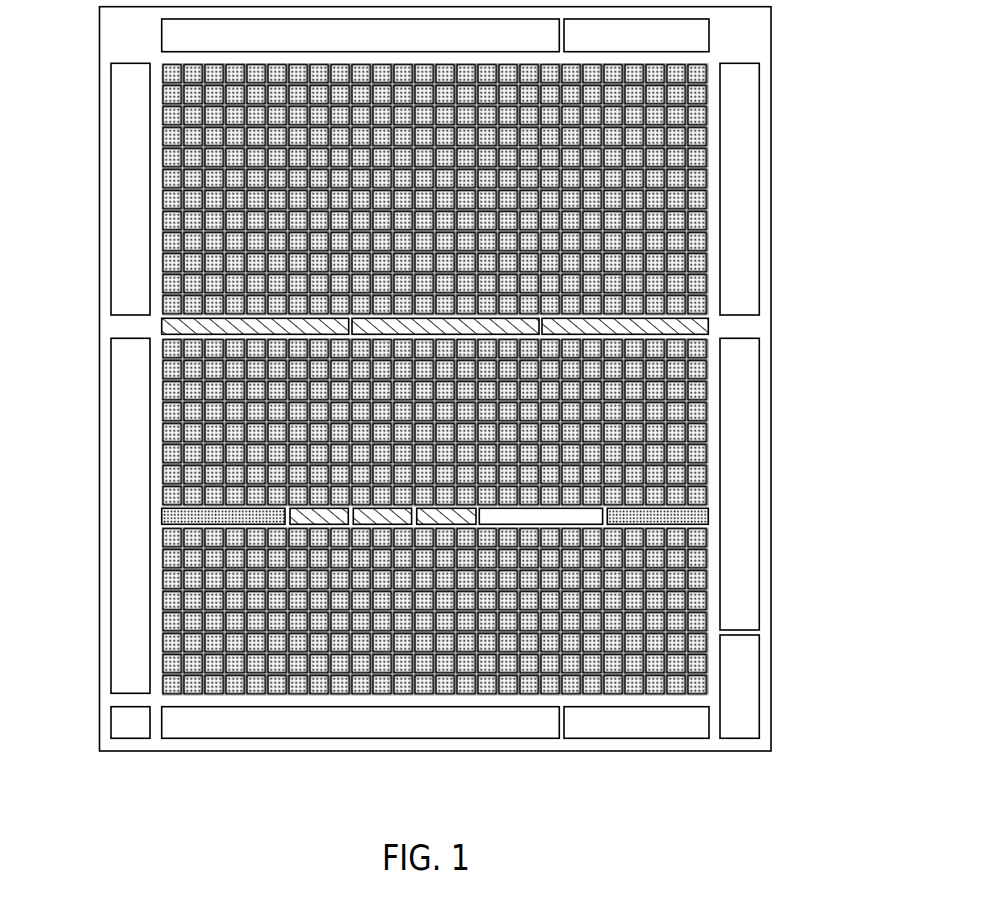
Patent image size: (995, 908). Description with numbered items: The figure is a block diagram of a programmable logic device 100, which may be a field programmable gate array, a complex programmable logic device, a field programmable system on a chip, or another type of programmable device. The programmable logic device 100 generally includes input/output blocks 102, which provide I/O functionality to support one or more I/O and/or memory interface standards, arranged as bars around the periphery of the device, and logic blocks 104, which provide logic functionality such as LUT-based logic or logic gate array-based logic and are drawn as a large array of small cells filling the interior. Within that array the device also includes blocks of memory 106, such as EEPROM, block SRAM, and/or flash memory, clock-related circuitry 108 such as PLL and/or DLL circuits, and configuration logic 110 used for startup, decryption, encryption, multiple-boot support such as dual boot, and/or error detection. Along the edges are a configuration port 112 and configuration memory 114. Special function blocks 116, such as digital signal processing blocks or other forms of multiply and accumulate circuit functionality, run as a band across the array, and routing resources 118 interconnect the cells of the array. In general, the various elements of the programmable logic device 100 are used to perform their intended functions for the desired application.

The programmable logic device 100 is at (810, 68).
The input/output blocks 102 is at (754, 174).
The logic blocks 104 is at (212, 116).
The blocks of memory 106 is at (300, 512).
The clock-related circuitry 108 is at (163, 515).
The configuration logic 110 is at (590, 517).
The configuration port 112 is at (755, 678).
The configuration memory 114 is at (117, 722).
The special function blocks 116 is at (163, 324).
The routing resources 118 is at (436, 379).